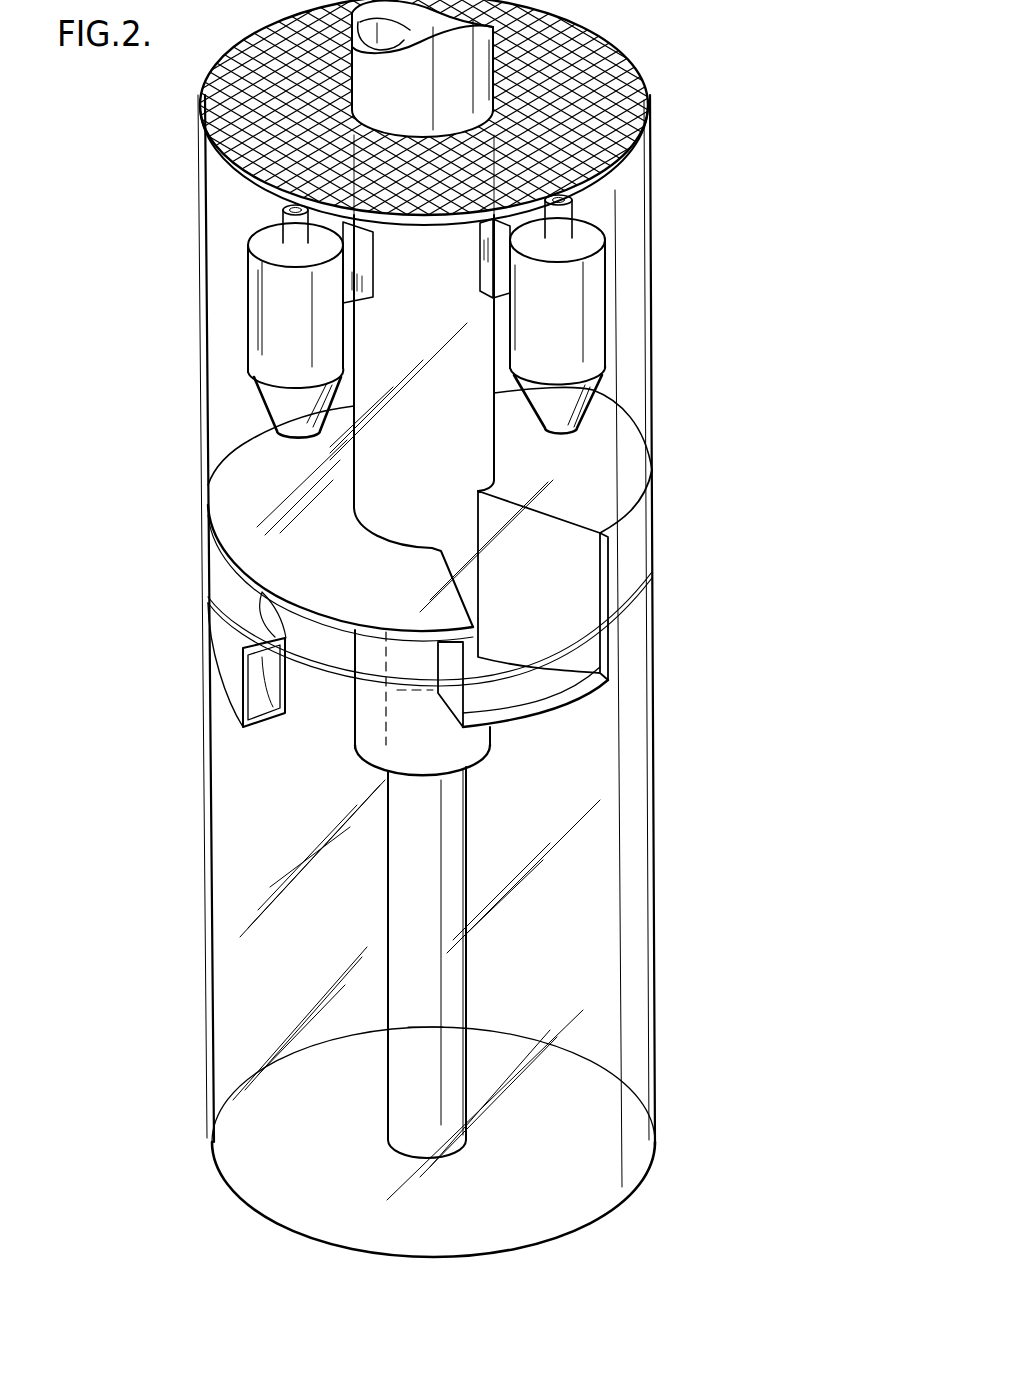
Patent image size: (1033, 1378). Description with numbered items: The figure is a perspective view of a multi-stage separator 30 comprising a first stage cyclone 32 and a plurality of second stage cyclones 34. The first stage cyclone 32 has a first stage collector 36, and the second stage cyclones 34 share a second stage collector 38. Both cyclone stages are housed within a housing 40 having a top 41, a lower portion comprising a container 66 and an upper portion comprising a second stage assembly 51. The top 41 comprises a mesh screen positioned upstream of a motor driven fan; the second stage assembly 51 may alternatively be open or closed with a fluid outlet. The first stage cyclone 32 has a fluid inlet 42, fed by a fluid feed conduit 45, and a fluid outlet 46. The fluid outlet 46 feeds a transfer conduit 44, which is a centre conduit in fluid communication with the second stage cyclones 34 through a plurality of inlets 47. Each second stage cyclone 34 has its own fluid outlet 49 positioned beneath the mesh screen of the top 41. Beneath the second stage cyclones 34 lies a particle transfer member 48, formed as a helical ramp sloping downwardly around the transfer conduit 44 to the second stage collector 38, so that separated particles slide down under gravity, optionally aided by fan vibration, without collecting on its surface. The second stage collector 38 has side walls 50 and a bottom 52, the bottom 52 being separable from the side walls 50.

The multi-stage separator 30 is at (723, 376).
The first stage cyclone 32 is at (655, 918).
The second stage cyclones 34 is at (262, 308).
The first stage collector 36 is at (640, 1140).
The second stage collector 38 is at (572, 676).
The housing 40 is at (208, 577).
The top 41 is at (628, 53).
The fluid inlet 42 is at (258, 703).
The transfer conduit 44 is at (471, 440).
The fluid feed conduit 45 is at (453, 968).
The fluid outlet 46 is at (355, 735).
The inlets 47 is at (483, 266).
The particle transfer member 48 is at (233, 503).
The fluid outlet 49 is at (280, 222).
The side walls 50 is at (603, 565).
The second stage assembly 51 is at (653, 278).
The bottom 52 is at (587, 692).
The container 66 is at (656, 858).